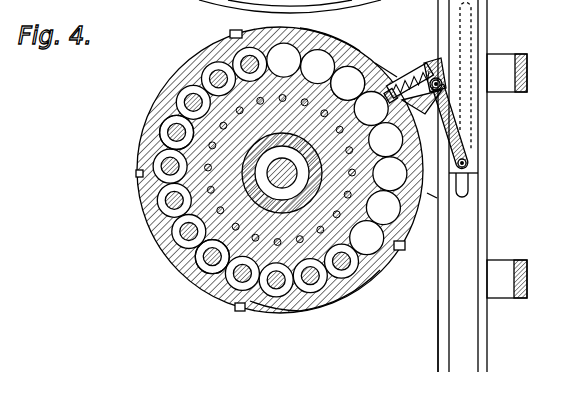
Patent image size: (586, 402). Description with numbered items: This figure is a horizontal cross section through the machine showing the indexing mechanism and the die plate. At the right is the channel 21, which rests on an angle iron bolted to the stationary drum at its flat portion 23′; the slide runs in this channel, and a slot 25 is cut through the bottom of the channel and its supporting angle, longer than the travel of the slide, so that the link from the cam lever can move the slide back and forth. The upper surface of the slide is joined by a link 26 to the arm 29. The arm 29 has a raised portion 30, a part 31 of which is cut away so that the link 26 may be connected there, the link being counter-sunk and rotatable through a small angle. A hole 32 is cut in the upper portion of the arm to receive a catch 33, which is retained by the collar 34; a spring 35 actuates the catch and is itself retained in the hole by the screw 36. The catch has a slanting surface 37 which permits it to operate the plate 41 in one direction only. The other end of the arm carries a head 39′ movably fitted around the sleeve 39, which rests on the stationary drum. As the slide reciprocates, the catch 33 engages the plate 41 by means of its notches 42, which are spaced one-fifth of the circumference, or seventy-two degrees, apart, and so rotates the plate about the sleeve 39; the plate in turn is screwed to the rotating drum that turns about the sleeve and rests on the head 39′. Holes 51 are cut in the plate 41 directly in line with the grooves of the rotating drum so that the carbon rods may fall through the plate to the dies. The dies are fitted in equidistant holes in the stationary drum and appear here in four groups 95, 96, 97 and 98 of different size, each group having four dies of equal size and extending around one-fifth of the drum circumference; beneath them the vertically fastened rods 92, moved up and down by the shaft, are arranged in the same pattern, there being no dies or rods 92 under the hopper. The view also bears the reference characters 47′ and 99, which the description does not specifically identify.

The channel 21 is at (488, 138).
The flat portion 23' is at (484, 300).
The slot 25 is at (466, 191).
The link 26 is at (462, 151).
The arm 29 is at (470, 116).
The raised portion 30 is at (434, 62).
The cut-away part 31 is at (442, 86).
The hole 32 is at (422, 108).
The catch 33 is at (401, 79).
The collar 34 is at (409, 67).
The spring 35 is at (430, 80).
The screw 36 is at (438, 72).
The slanting surface 37 is at (395, 88).
The sleeve 39 is at (197, 179).
The head 39' is at (196, 209).
The plate 41 is at (350, 290).
The notches 42 is at (137, 174).
The lower stop block 47' is at (527, 279).
The holes 51 is at (237, 30).
The rods 92 is at (207, 78).
The group of dies 95 is at (294, 308).
The group of dies 96 is at (210, 268).
The group of dies 97 is at (160, 131).
The group of dies 98 is at (327, 43).
The step 99 is at (399, 250).